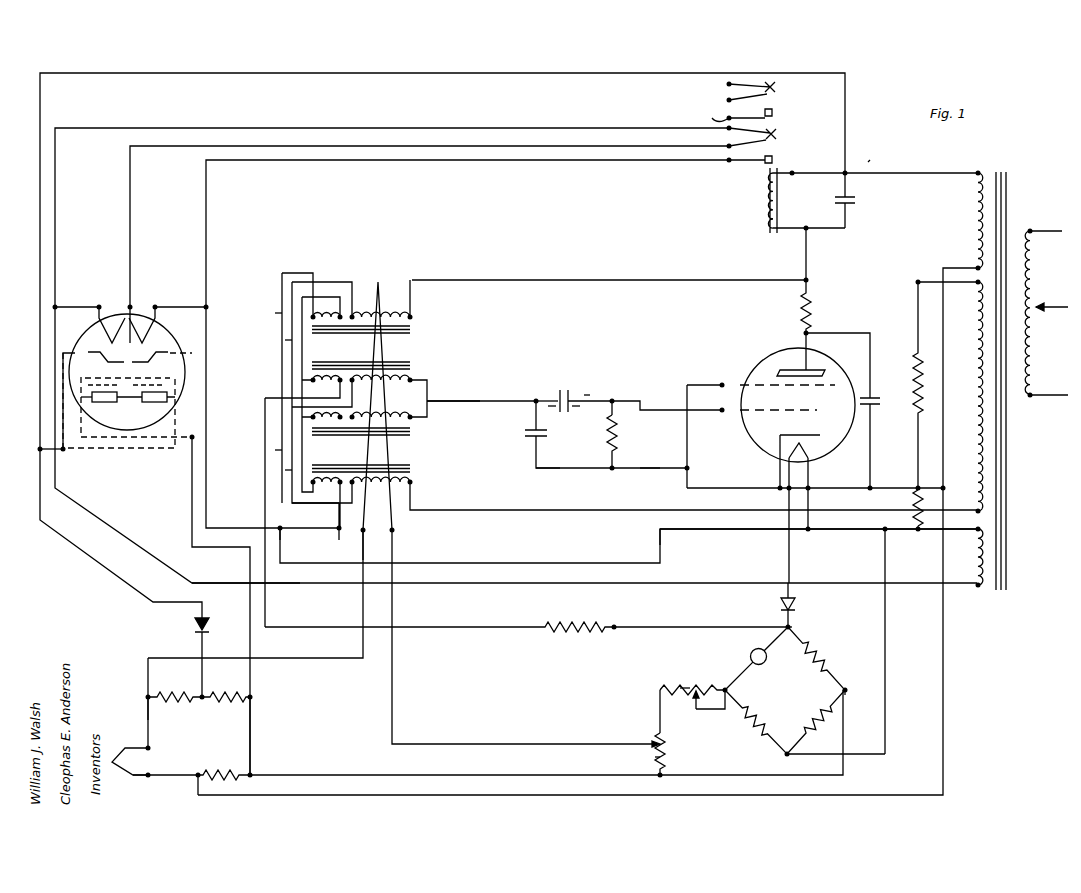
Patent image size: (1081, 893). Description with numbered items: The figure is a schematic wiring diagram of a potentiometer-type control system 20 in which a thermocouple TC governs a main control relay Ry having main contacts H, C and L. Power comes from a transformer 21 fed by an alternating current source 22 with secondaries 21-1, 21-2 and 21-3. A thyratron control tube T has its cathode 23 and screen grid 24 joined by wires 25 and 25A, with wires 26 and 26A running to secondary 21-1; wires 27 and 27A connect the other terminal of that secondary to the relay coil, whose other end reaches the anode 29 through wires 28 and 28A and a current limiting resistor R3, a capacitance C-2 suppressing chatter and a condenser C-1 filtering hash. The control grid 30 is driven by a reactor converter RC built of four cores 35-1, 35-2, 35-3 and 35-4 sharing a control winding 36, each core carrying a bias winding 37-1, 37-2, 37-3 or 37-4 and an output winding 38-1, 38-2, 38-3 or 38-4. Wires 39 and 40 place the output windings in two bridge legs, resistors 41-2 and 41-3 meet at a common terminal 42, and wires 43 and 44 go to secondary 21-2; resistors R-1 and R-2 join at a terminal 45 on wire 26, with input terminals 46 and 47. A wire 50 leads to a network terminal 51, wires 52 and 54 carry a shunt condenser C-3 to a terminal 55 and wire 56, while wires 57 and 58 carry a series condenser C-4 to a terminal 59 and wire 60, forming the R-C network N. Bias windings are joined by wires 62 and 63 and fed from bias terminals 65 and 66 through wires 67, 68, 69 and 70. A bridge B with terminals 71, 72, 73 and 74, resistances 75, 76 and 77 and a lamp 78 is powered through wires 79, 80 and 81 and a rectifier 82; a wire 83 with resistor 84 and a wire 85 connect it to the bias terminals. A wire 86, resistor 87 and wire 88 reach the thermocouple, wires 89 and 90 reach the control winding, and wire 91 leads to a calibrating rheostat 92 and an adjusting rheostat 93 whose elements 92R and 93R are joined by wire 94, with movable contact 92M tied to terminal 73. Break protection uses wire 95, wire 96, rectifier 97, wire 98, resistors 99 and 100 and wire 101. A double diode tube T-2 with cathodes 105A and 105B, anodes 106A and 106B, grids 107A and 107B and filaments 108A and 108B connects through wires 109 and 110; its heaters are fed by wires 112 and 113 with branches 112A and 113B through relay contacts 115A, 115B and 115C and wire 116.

The control system 20 is at (868, 158).
The transformer 21 is at (1007, 428).
The secondary winding 21-1 is at (978, 215).
The secondary winding 21-2 is at (980, 340).
The secondary winding 21-3 is at (980, 550).
The alternating current source 22 is at (1048, 402).
The cathode 23 is at (778, 437).
The screen grid 24 is at (745, 385).
The wire 25 is at (698, 436).
The wire 25A is at (698, 488).
The wire 26 is at (822, 488).
The wire 26A is at (948, 430).
The wire 27 is at (918, 173).
The wire 27A is at (804, 175).
The wire 28 is at (800, 240).
The wire 28A is at (808, 270).
The plate or anode 29 is at (822, 368).
The control grid 30 is at (805, 412).
The single-window core 35-1 is at (412, 330).
The single-window core 35-2 is at (412, 368).
The single-window core 35-3 is at (412, 432).
The single-window core 35-4 is at (412, 470).
The control winding 36 is at (378, 282).
The bias winding 37-1 is at (327, 312).
The bias winding 37-2 is at (322, 375).
The bias winding 37-3 is at (330, 425).
The bias winding 37-4 is at (330, 478).
The output winding 38-1 is at (403, 315).
The output winding 38-2 is at (398, 375).
The output winding 38-3 is at (387, 403).
The output winding 38-4 is at (398, 478).
The wire 39 is at (285, 340).
The wire 40 is at (275, 450).
The resistor 41-2 is at (430, 388).
The resistor 41-3 is at (430, 412).
The common terminal 42 is at (430, 400).
The wire 43 is at (535, 280).
The wire 44 is at (490, 510).
The common terminal 45 is at (915, 490).
The terminal 46 is at (916, 284).
The terminal 47 is at (915, 522).
The wire 50 is at (510, 400).
The network terminal 51 is at (538, 398).
The wire 52 is at (533, 420).
The wire 54 is at (558, 470).
The terminal 55 is at (612, 470).
The wire 56 is at (642, 470).
The wire 57 is at (552, 406).
The wire 58 is at (578, 406).
The terminal 59 is at (614, 398).
The wire 60 is at (652, 408).
The wire 62 is at (275, 316).
The wire 63 is at (285, 470).
The D.C. bias terminal 65 is at (280, 530).
The D.C. bias terminal 66 is at (292, 387).
The wire 67 is at (290, 503).
The wire 68 is at (285, 506).
The wire 69 is at (339, 531).
The wire 70 is at (268, 410).
The bridge terminal 71 is at (798, 622).
The bridge terminal 72 is at (786, 757).
The bridge terminal 73 is at (725, 688).
The bridge terminal 74 is at (850, 686).
The resistance 75 is at (822, 652).
The resistance 76 is at (832, 725).
The resistance 77 is at (758, 730).
The incandescent lamp 78 is at (758, 665).
The wire 79 is at (885, 655).
The wire 80 is at (888, 545).
The wire 81 is at (845, 583).
The rectifier 82 is at (778, 600).
The wire 83 is at (632, 627).
The resistor 84 is at (550, 630).
The wire 85 is at (700, 563).
The wire 86 is at (810, 468).
The resistor 87 is at (220, 772).
The wire 88 is at (815, 529).
The wire 89 is at (148, 722).
The wire 90 is at (294, 658).
The wire 91 is at (396, 688).
The calibrating rheostat 92 is at (662, 685).
The resistance element 92R is at (686, 680).
The movable contact 92M is at (698, 710).
The adjusting rheostat 93 is at (650, 713).
The resistance element 93R is at (648, 757).
The wire 94 is at (658, 692).
The wire 95 is at (888, 795).
The wire 96 is at (845, 100).
The rectifier 97 is at (205, 620).
The wire 98 is at (200, 632).
The resistor 99 is at (170, 696).
The resistor 100 is at (222, 696).
The wire 101 is at (252, 718).
The cathode 105A is at (90, 352).
The cathode 105B is at (158, 350).
The anode 106A is at (97, 402).
The anode 106B is at (155, 402).
The grid 107A is at (108, 383).
The grid 107B is at (151, 383).
The heating filament 108A is at (100, 318).
The heating filament 108B is at (135, 310).
The wire 109 is at (192, 496).
The wire 110 is at (63, 452).
The wire 112 is at (370, 128).
The branch lead 112A is at (62, 305).
The wire 113 is at (392, 160).
The branch lead 113B is at (172, 305).
The stationary relay contact 115A is at (770, 128).
The stationary relay contact 115B is at (770, 160).
The movable relay contact 115C is at (780, 140).
The wire 116 is at (392, 146).
The control tube T is at (756, 350).
The double diode tube T-2 is at (113, 300).
The reactor converter RC is at (278, 270).
The main control relay Ry is at (760, 205).
The bridge B is at (796, 696).
The thermocouple TC is at (133, 790).
The R-C network N is at (578, 394).
The condenser C-1 is at (880, 400).
The capacitance C-2 is at (858, 200).
The shunt condenser C-3 is at (528, 440).
The series condenser C-4 is at (566, 388).
The resistor R-1 is at (912, 420).
The resistor R-2 is at (912, 500).
The current limiting resistor R3 is at (800, 315).
The main power control relay contact H is at (729, 84).
The main power control relay contact C is at (729, 100).
The main power control relay contact L is at (736, 117).